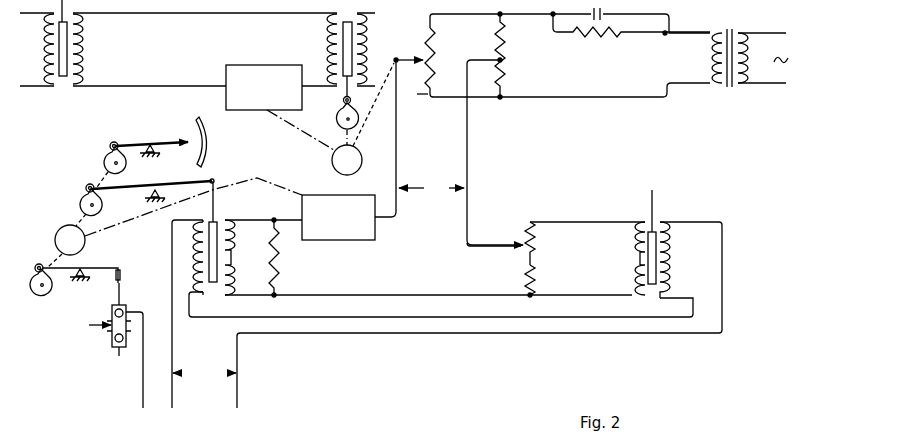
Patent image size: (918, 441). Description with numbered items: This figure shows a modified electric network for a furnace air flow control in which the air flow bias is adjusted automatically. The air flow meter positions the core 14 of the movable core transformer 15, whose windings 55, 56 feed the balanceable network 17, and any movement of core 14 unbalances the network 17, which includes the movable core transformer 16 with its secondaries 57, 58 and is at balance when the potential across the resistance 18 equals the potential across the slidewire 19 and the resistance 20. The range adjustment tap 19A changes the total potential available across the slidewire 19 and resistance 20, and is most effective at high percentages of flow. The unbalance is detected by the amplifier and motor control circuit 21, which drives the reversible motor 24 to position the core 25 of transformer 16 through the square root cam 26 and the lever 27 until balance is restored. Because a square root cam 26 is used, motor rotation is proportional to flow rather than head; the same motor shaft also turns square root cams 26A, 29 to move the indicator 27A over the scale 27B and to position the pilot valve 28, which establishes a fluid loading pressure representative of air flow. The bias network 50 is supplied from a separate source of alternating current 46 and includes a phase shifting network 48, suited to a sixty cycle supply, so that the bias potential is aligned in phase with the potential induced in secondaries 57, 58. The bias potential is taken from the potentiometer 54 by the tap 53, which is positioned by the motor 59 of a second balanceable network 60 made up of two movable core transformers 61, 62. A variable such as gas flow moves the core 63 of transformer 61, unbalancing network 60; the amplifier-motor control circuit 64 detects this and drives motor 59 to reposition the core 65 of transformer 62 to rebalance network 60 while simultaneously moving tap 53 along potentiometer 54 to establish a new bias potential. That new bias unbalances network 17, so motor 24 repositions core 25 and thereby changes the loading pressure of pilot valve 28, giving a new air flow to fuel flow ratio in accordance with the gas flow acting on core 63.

The core 14 is at (652, 258).
The movable core transformer 15 is at (647, 216).
The movable core transformer 16 is at (233, 209).
The balanceable network 17 is at (421, 281).
The resistance 18 is at (280, 250).
The slidewire 19 is at (540, 243).
The range adjustment tap 19A is at (517, 238).
The resistance 20 is at (542, 281).
The amplifier and motor control circuit 21 is at (339, 240).
The reversible motor 24 is at (59, 231).
The core 25 is at (213, 282).
The square root cam 26 is at (78, 200).
The square root cam 26A is at (105, 158).
The lever 27 is at (140, 186).
The indicator 27A is at (177, 138).
The scale 27B is at (212, 152).
The pilot valve 28 is at (128, 304).
The square root cam 29 is at (39, 298).
The source of alternating current 46 is at (750, 49).
The phase shifting network 48 is at (611, 60).
The bias network 50 is at (603, 118).
The tap 53 is at (398, 60).
The potentiometer 54 is at (437, 50).
The winding 55 is at (634, 242).
The winding 56 is at (633, 280).
The secondary 57 is at (237, 244).
The secondary 58 is at (237, 274).
The motor 59 is at (362, 149).
The balanceable network 60 is at (212, 54).
The movable core transformer 61 is at (68, 103).
The movable core transformer 62 is at (332, 106).
The core 63 is at (67, 50).
The amplifier-motor control circuit 64 is at (268, 65).
The core 65 is at (343, 52).